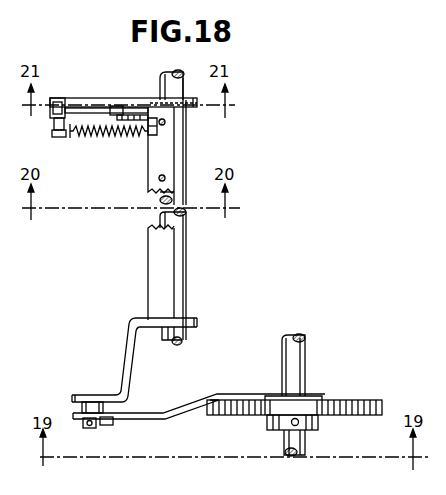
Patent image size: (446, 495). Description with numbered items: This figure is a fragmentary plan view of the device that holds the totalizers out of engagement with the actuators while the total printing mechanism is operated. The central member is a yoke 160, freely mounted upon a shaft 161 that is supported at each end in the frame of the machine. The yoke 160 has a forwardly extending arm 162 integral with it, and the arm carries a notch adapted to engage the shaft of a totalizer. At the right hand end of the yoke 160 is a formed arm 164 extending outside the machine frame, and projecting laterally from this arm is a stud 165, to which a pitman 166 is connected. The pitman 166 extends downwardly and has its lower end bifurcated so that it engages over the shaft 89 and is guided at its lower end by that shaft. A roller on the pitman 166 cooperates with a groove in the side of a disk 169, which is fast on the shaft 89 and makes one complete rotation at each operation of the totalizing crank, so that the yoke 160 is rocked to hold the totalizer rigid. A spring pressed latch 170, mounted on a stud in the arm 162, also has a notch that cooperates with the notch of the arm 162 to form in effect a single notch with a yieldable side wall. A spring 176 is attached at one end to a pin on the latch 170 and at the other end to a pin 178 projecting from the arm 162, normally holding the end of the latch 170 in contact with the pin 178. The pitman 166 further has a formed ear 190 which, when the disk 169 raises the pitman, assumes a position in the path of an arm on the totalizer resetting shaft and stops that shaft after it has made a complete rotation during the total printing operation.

The shaft 89 is at (302, 362).
The yoke 160 is at (155, 163).
The shaft 161 is at (162, 82).
The arm 162 is at (122, 102).
The formed arm 164 is at (127, 343).
The stud 165 is at (88, 424).
The pitman 166 is at (199, 404).
The disk 169 is at (343, 402).
The spring pressed latch 170 is at (88, 110).
The spring 176 is at (88, 135).
The pin 178 is at (48, 115).
The formed ear 190 is at (113, 419).